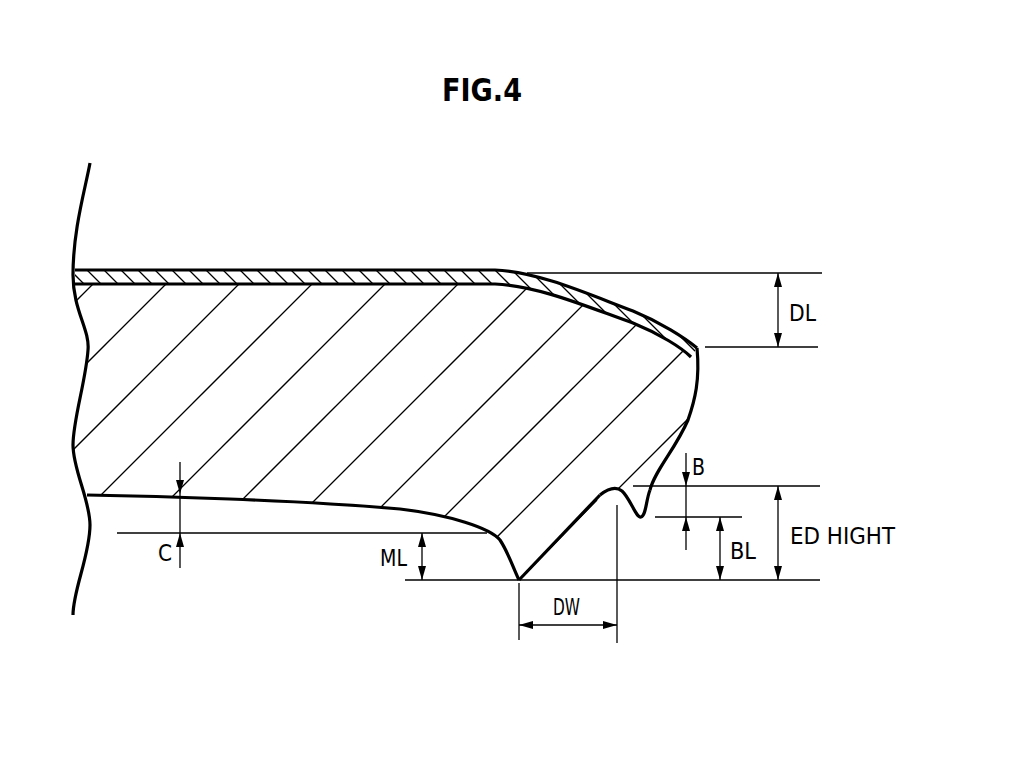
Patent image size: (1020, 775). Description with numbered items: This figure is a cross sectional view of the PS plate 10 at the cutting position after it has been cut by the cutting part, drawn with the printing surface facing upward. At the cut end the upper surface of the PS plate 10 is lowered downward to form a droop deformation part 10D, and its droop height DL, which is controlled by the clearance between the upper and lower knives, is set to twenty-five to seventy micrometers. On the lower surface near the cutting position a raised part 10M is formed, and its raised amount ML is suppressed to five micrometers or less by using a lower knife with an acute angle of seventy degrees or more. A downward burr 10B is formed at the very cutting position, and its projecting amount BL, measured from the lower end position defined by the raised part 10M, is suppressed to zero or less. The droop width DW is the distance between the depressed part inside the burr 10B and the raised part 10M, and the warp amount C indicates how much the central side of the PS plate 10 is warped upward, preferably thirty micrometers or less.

The PS plate 10 is at (266, 490).
The droop deformation part 10D is at (620, 305).
The raised part 10M is at (520, 582).
The burr 10B is at (640, 519).